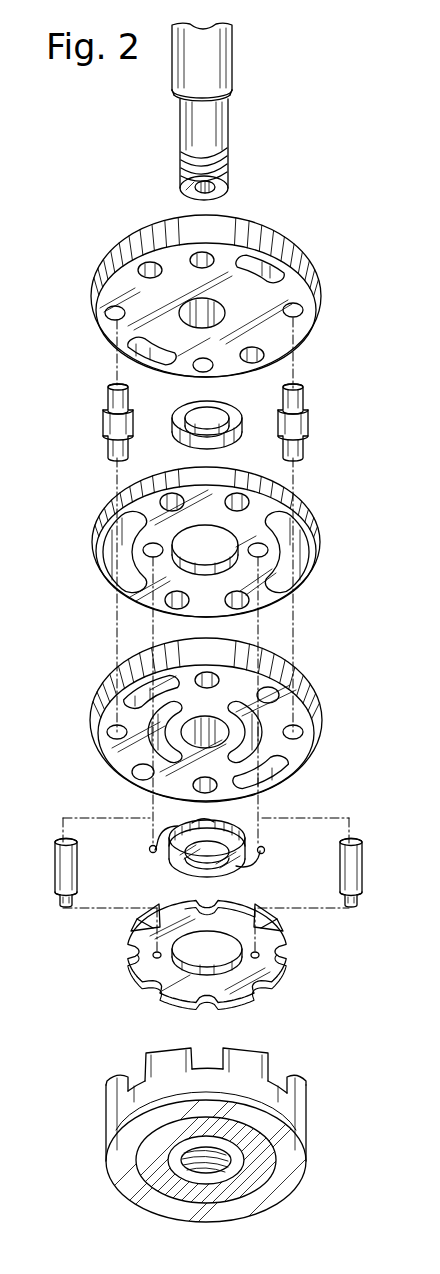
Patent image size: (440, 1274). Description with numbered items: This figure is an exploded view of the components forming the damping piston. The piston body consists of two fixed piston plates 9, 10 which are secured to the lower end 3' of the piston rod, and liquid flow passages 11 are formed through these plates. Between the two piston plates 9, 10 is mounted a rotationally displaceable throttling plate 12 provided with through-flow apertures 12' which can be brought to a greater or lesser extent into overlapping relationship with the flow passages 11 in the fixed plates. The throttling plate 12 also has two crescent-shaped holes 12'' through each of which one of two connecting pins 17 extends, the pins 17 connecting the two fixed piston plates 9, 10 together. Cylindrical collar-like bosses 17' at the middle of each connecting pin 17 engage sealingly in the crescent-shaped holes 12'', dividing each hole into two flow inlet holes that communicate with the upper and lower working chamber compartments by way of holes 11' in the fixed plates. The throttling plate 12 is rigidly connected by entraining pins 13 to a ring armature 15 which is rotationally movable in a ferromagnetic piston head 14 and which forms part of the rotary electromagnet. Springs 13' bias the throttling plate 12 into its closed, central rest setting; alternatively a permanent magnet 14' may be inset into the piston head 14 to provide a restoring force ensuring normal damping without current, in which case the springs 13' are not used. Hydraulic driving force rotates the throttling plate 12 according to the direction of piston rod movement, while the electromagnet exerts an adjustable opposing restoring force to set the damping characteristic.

The lower end of the piston rod 3' is at (227, 111).
The piston plate 9 is at (322, 300).
The liquid flow passages 11 is at (231, 491).
The holes 11' is at (206, 501).
The connecting pins 17 is at (209, 412).
The cylindrical collar-like bosses 17' is at (272, 425).
The throttling plate 12 is at (242, 542).
The through-flow apertures 12' is at (220, 571).
The crescent-shaped holes 12'' is at (248, 551).
The piston plate 10 is at (328, 730).
The entraining pins 13 is at (208, 860).
The springs 13' is at (214, 841).
The ring armature 15 is at (285, 965).
The piston head 14 is at (217, 1144).
The permanent magnet 14' is at (238, 1155).